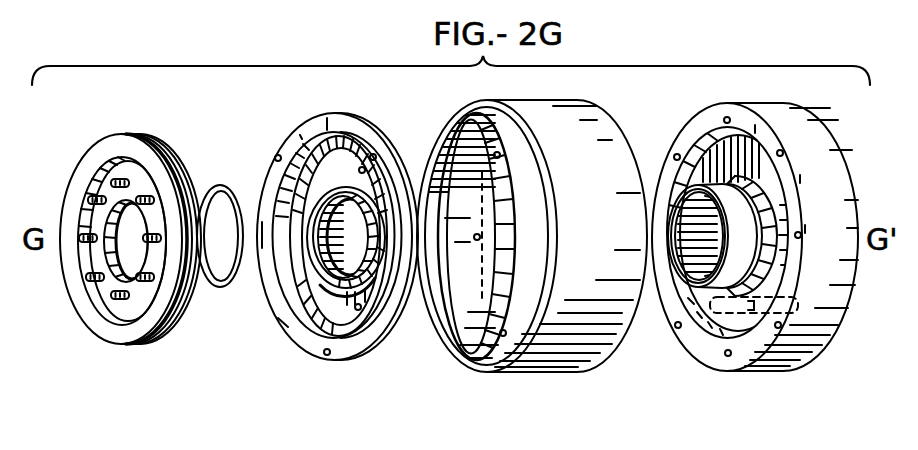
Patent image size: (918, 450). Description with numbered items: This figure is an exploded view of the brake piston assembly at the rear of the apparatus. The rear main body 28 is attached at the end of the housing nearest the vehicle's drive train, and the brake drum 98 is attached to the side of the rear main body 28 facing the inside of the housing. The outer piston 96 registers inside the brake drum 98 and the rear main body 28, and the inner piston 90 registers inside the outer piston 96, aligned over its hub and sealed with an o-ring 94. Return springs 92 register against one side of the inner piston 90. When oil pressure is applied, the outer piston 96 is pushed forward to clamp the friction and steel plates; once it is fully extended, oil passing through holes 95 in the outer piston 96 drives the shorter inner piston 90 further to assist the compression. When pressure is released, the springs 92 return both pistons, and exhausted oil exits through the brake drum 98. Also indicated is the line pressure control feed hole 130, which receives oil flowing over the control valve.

The rear main body 28 is at (762, 372).
The inner piston 90 is at (124, 345).
The return springs 92 is at (93, 283).
The o-ring 94 is at (222, 289).
The holes 95 is at (362, 166).
The outer piston 96 is at (327, 355).
The brake drum 98 is at (485, 373).
The line pressure control feed hole 130 is at (730, 314).